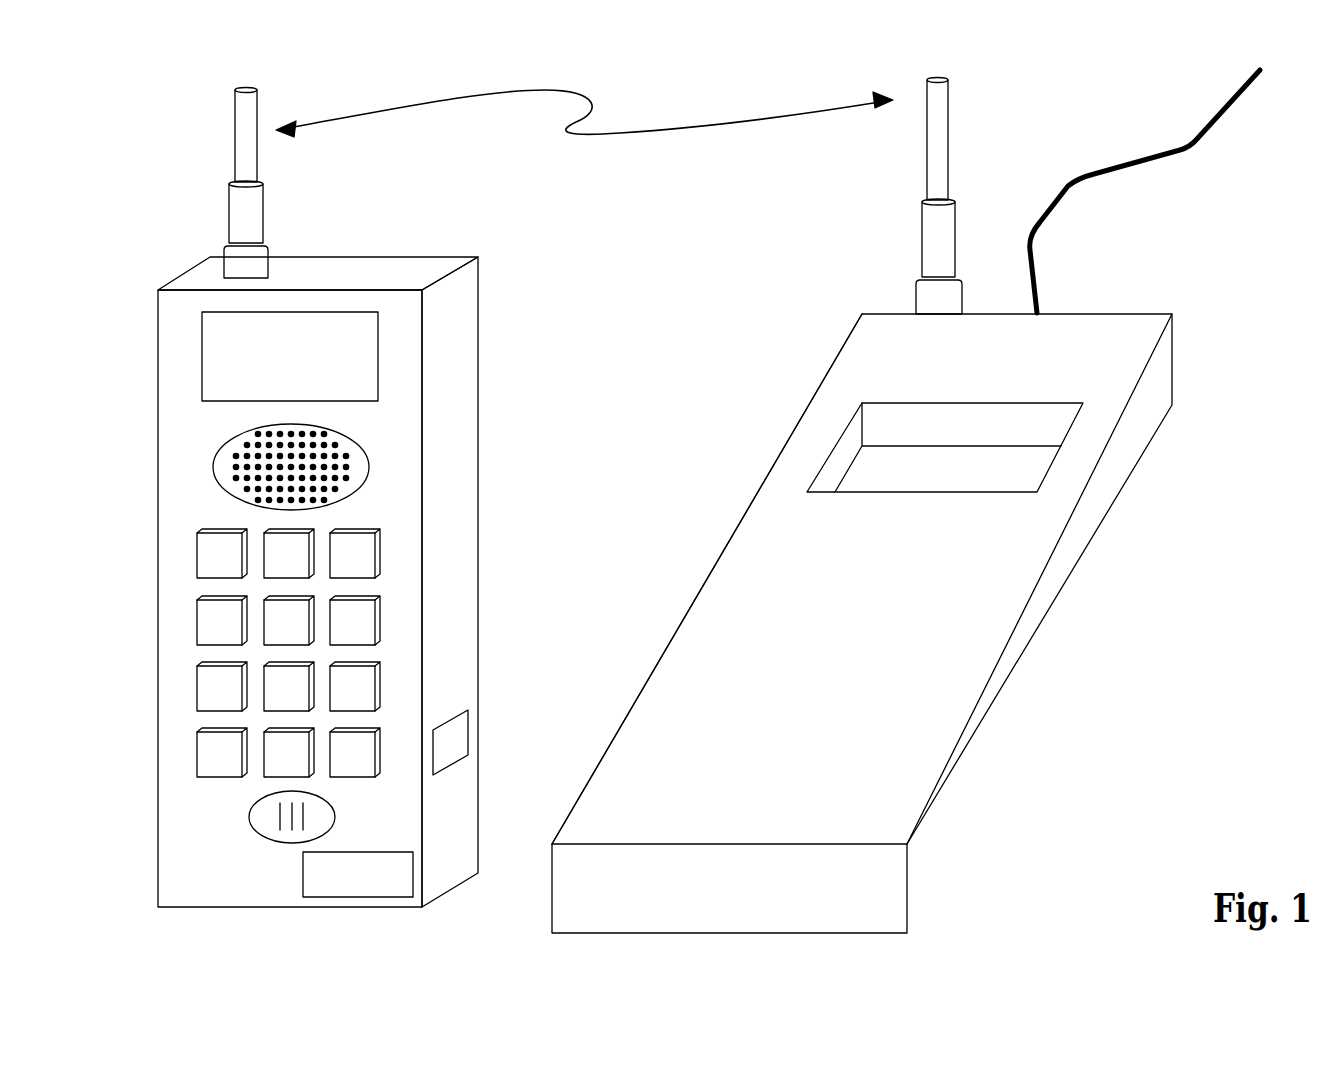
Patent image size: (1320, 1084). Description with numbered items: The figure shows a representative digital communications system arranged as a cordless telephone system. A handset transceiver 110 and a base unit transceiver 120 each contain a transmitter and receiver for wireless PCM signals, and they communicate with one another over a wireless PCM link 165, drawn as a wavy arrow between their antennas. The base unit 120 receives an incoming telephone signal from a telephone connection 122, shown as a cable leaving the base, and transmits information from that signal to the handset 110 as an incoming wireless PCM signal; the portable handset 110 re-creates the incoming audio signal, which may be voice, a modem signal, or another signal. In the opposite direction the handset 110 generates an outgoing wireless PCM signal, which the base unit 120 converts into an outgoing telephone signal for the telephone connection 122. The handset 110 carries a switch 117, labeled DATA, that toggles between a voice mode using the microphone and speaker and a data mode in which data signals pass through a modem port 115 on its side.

The handset transceiver 110 is at (357, 263).
The modem port 115 is at (468, 737).
The switch 117 is at (357, 898).
The base unit transceiver 120 is at (1080, 327).
The telephone connection 122 is at (1193, 150).
The wireless PCM link 165 is at (620, 138).